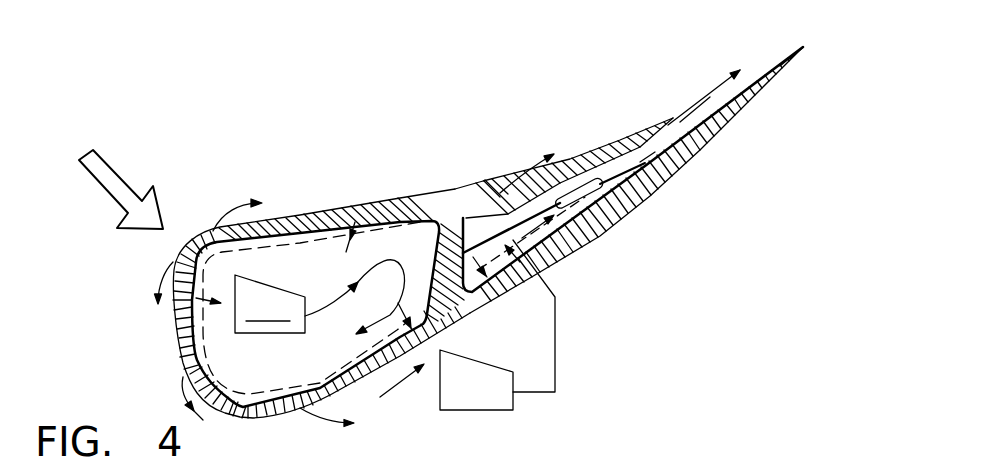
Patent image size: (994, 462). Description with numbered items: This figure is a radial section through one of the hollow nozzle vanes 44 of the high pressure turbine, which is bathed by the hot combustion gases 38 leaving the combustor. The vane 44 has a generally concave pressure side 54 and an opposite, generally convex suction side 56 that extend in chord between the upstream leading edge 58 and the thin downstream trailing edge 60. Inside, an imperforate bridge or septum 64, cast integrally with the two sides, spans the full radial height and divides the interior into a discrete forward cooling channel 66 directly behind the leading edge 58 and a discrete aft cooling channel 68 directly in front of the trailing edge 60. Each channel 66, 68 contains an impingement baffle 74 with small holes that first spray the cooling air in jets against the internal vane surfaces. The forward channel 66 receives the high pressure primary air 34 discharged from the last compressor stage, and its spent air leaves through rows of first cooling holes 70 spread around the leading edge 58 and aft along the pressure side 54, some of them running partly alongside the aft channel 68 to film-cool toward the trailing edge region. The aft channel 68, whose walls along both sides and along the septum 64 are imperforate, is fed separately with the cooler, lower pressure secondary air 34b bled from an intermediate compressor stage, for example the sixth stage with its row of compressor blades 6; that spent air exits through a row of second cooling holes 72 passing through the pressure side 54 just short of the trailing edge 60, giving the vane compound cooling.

The hot combustion gases 38 is at (113, 170).
The leading edge 58 is at (190, 238).
The trailing edge 60 is at (805, 47).
The pressure side 54 is at (640, 130).
The suction side 56 is at (614, 212).
The nozzle vane 44 is at (357, 198).
The first cooling holes 70 is at (288, 216).
The second cooling holes 72 is at (686, 106).
The aft cooling channel 68 is at (655, 167).
The septum 64 is at (432, 262).
The forward cooling channel 66 is at (287, 374).
The impingement baffle 74 is at (517, 255).
The pressurized primary air 34 is at (364, 270).
The pressurized secondary air 34b is at (540, 258).
The sixth row of compressor blades 6 is at (479, 391).